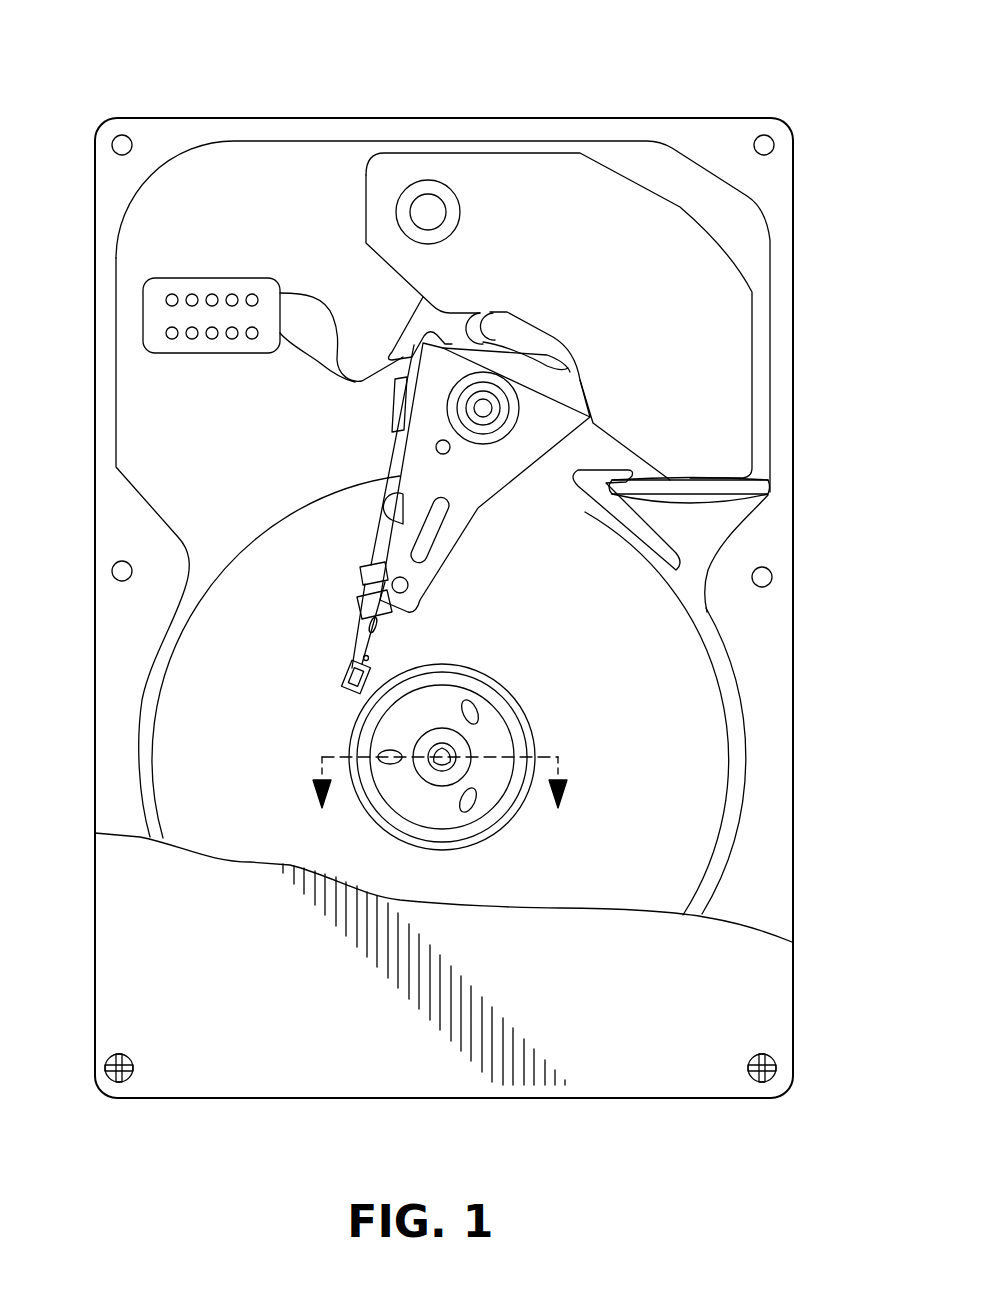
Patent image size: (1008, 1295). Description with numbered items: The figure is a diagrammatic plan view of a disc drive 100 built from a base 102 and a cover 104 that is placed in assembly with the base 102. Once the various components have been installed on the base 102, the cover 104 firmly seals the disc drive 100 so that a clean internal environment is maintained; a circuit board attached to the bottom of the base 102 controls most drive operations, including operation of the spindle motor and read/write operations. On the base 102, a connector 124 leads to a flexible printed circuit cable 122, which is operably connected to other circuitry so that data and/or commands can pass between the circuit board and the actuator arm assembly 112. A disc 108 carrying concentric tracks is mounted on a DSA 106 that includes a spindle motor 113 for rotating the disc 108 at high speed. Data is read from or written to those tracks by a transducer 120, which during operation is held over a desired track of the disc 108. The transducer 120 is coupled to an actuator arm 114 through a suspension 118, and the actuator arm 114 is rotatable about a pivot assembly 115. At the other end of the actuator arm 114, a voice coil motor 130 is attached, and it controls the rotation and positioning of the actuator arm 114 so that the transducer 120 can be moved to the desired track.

The disc drive 100 is at (180, 70).
The base 102 is at (148, 432).
The cover 104 is at (143, 907).
The DSA 106 is at (752, 675).
The disc 108 is at (678, 793).
The actuator arm assembly 112 is at (480, 522).
The spindle motor 113 is at (468, 750).
The actuator arm 114 is at (437, 550).
The pivot assembly 115 is at (527, 401).
The suspension 118 is at (363, 637).
The transducer 120 is at (347, 671).
The flexible printed circuit cable 122 is at (308, 360).
The connector 124 is at (218, 278).
The voice coil motor 130 is at (486, 322).